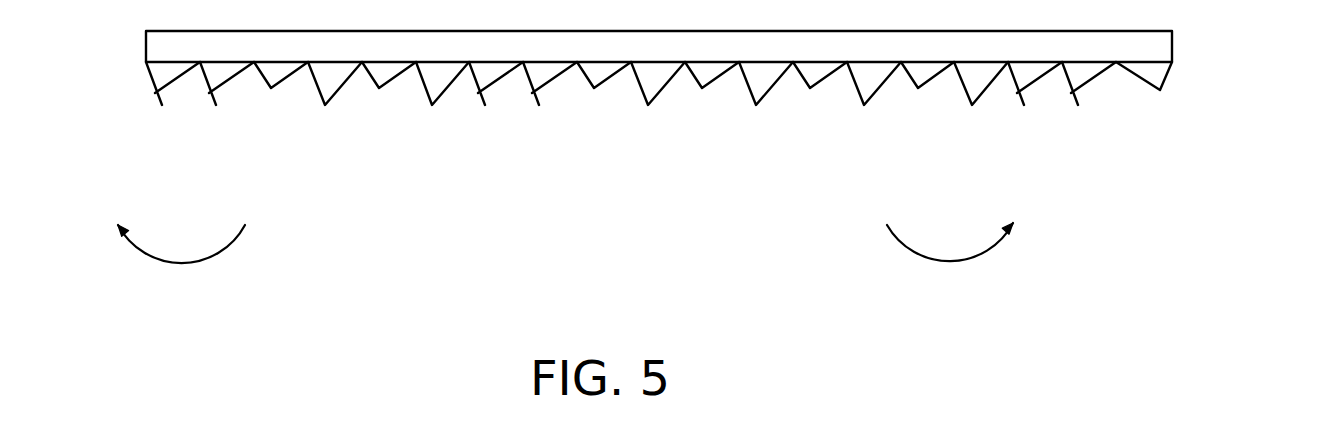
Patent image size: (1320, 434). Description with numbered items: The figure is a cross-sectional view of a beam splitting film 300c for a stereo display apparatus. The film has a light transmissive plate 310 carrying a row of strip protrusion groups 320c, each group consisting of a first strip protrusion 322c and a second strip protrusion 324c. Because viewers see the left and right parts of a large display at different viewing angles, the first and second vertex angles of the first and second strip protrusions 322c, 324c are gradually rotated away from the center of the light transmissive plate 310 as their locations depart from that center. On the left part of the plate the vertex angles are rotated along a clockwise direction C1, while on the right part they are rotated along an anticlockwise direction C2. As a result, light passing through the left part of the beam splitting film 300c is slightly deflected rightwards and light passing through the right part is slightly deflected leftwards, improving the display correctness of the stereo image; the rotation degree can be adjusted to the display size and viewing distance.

The beam splitting film 300c is at (685, 121).
The light transmissive plate 310 is at (1162, 47).
The strip protrusion groups 320c is at (637, 147).
The first strip protrusions 322c is at (621, 71).
The second strip protrusions 324c is at (672, 80).
The clockwise direction C1 is at (178, 264).
The anticlockwise direction C2 is at (948, 264).